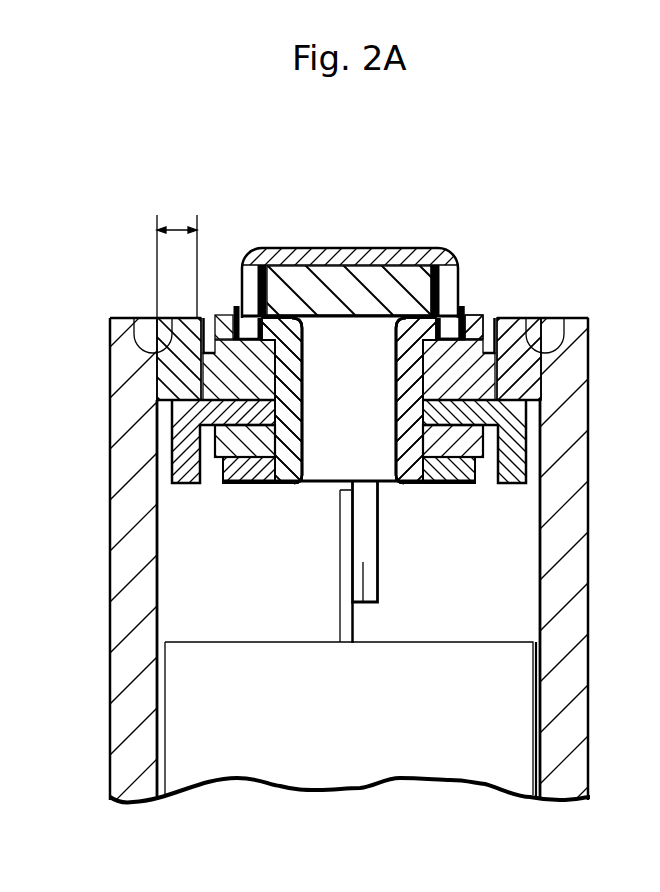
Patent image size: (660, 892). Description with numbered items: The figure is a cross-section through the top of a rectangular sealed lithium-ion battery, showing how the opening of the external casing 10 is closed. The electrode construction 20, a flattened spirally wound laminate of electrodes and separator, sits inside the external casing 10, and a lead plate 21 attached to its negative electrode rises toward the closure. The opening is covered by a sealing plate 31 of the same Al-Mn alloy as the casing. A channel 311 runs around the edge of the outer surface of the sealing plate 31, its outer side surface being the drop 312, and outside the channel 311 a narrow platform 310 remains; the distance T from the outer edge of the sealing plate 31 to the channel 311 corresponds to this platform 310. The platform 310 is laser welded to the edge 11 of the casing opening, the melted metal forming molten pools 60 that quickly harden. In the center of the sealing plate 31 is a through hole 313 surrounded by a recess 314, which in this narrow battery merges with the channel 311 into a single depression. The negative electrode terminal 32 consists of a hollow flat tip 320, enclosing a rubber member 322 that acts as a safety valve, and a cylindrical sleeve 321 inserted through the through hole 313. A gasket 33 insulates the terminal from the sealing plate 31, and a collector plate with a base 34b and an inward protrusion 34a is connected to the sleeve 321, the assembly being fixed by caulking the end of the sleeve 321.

The distance T is at (174, 226).
The external casing 10 is at (128, 534).
The edge of the opening 11 is at (571, 356).
The electrode construction 20 is at (200, 722).
The lead plate 21 is at (340, 615).
The sealing plate 31 is at (528, 366).
The platform 310 is at (530, 320).
The channel 311 is at (514, 318).
The recess 314 is at (330, 370).
The drop 312 is at (204, 324).
The through hole 313 is at (305, 375).
The negative electrode terminal 32 is at (360, 250).
The tip 320 is at (287, 264).
The sleeve 321 is at (307, 485).
The rubber member 322 is at (331, 290).
The gasket 33 is at (474, 318).
The protrusion 34a is at (365, 563).
The base 34b is at (456, 485).
The molten pools 60 is at (140, 346).